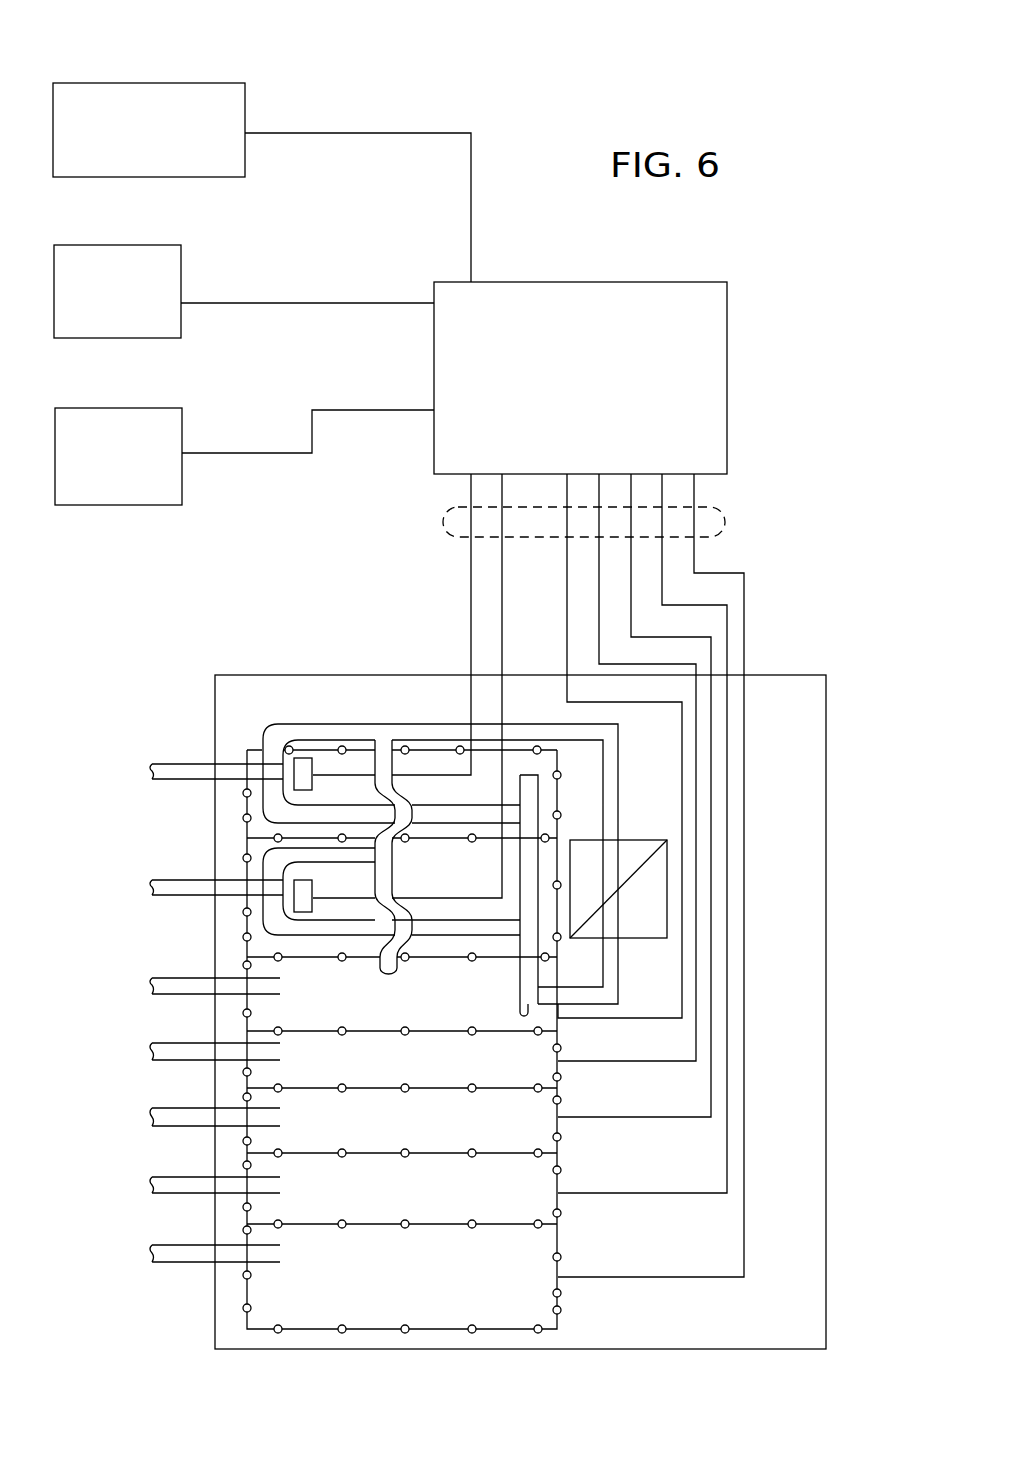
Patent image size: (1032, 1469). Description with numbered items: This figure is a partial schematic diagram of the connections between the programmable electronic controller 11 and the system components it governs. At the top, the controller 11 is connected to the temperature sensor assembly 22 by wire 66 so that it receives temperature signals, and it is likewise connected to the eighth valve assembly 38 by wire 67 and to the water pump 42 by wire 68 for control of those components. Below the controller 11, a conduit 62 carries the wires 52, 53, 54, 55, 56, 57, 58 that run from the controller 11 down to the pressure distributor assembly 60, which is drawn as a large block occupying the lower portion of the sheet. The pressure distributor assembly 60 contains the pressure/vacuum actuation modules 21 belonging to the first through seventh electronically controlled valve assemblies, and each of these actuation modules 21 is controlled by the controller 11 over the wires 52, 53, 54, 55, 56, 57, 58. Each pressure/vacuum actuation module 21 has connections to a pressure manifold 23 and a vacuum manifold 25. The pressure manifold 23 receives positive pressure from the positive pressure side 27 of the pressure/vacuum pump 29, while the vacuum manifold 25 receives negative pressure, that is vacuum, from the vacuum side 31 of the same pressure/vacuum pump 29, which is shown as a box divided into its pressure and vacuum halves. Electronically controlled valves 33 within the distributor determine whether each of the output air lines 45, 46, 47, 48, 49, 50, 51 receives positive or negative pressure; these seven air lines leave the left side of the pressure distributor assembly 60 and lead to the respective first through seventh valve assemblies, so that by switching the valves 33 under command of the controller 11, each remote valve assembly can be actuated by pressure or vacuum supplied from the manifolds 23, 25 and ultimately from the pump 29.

The programmable electronic controller 11 is at (710, 372).
The pressure/vacuum actuation module 21 is at (530, 1068).
The temperature sensor assembly 22 is at (125, 86).
The pressure manifold 23 is at (300, 732).
The vacuum manifold 25 is at (527, 775).
The positive pressure side 27 is at (625, 858).
The pressure/vacuum pump 29 is at (643, 838).
The vacuum side 31 is at (652, 895).
The electronically controlled valve 33 is at (255, 752).
The eighth valve assembly 38 is at (170, 262).
The water pump 42 is at (160, 483).
The output air line 45 is at (157, 762).
The output air line 46 is at (160, 880).
The output air line 47 is at (157, 975).
The output air line 48 is at (170, 1043).
The output air line 49 is at (170, 1108).
The output air line 50 is at (170, 1177).
The output air line 51 is at (170, 1245).
The wire 52 is at (471, 492).
The wire 53 is at (502, 495).
The wire 54 is at (567, 550).
The wire 55 is at (599, 573).
The wire 56 is at (631, 592).
The wire 57 is at (723, 620).
The wire 58 is at (743, 643).
The pressure distributor assembly 60 is at (832, 740).
The conduit 62 is at (726, 521).
The wire 66 is at (333, 132).
The wire 67 is at (308, 303).
The wire 68 is at (264, 453).